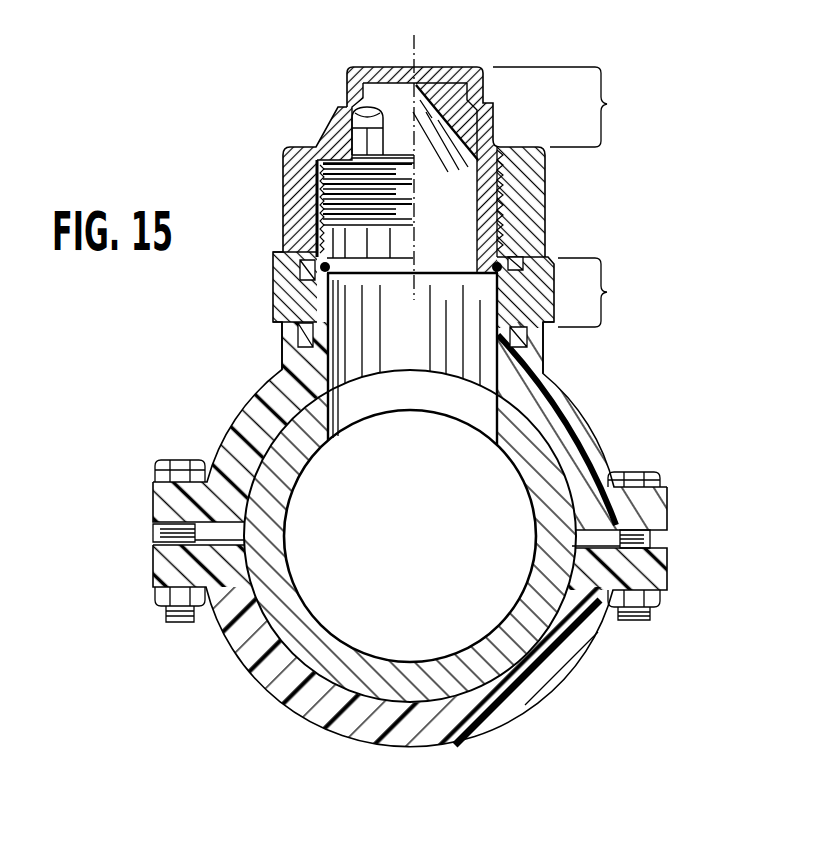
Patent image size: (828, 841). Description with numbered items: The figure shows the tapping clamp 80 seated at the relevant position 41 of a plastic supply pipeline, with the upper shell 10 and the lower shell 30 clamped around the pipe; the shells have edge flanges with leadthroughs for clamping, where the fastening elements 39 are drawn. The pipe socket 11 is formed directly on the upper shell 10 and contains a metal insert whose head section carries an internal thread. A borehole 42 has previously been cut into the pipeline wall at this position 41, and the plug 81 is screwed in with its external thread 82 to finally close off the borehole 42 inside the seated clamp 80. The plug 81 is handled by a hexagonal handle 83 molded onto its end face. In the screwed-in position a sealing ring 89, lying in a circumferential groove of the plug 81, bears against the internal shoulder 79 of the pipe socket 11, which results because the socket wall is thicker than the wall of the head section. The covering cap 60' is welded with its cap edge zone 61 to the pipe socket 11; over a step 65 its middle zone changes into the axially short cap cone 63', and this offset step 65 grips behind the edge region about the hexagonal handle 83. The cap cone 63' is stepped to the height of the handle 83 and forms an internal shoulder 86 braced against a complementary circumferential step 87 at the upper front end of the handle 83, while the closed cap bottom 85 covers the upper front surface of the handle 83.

The upper shell 10 is at (573, 403).
The pipe socket 11 is at (298, 353).
The lower shell 30 is at (547, 697).
The bolts 39 is at (153, 527).
The position 41 is at (502, 467).
The borehole 42 is at (397, 400).
The covering cap 60' is at (320, 226).
The cap edge zone 61 is at (456, 313).
The cap cone 63' is at (568, 107).
The step 65 is at (523, 142).
The internal shoulder 79 is at (298, 276).
The tapping clamp 80 is at (590, 213).
The plug 81 is at (398, 188).
The external thread 82 is at (325, 189).
The hexagonal handle 83 is at (360, 130).
The cap bottom 85 is at (387, 70).
The internal shoulder 86 is at (357, 103).
The circumferential step 87 is at (447, 100).
The sealing ring 89 is at (500, 266).